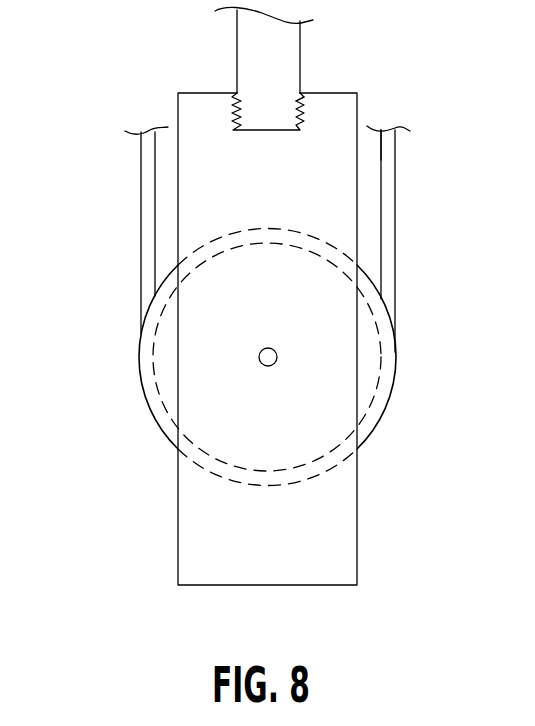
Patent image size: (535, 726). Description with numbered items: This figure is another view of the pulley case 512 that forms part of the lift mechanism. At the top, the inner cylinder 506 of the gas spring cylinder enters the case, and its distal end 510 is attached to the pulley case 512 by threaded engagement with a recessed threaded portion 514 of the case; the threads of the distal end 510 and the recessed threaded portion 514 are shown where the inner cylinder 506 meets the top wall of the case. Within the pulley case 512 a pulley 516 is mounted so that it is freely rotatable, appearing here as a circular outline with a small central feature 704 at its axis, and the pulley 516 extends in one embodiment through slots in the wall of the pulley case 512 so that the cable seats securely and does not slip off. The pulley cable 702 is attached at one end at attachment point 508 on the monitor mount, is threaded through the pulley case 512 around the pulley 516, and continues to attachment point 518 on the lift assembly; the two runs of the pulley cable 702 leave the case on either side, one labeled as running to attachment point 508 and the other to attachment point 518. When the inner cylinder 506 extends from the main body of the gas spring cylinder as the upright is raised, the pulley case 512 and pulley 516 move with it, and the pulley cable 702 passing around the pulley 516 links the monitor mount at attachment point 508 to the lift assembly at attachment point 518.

The inner cylinder 506 is at (300, 48).
The distal end 510 is at (236, 96).
The recessed threaded portion 514 is at (304, 115).
The pulley case 512 is at (359, 545).
The pulley 516 is at (381, 419).
The center hole 704 is at (274, 366).
The pulley cable 702 is at (396, 243).
The attachment point 508 is at (141, 152).
The attachment point 518 is at (396, 155).